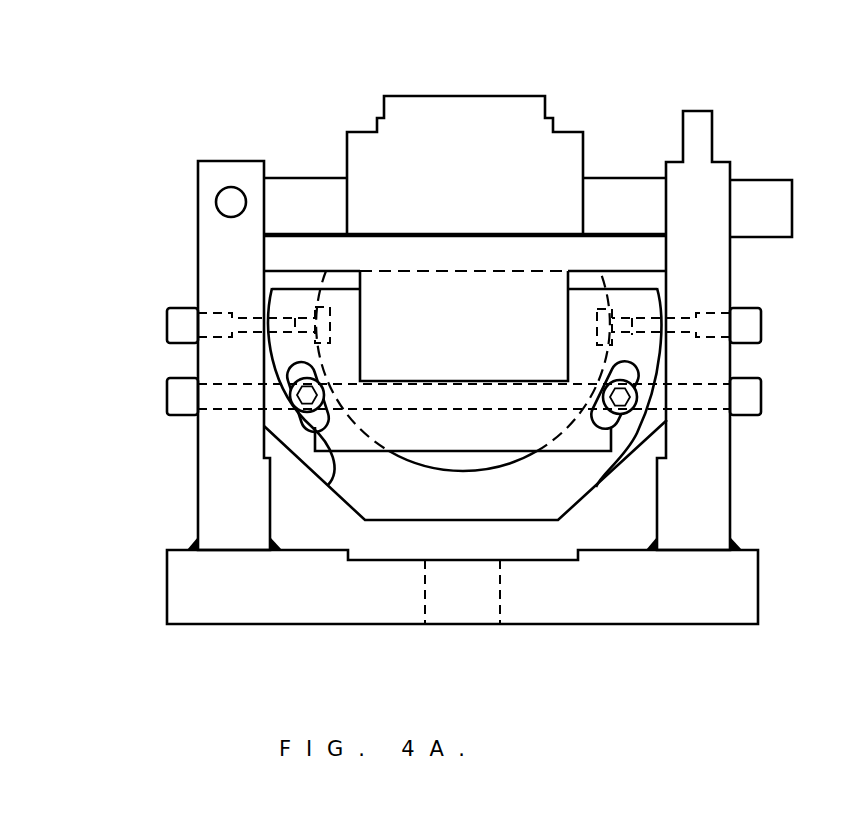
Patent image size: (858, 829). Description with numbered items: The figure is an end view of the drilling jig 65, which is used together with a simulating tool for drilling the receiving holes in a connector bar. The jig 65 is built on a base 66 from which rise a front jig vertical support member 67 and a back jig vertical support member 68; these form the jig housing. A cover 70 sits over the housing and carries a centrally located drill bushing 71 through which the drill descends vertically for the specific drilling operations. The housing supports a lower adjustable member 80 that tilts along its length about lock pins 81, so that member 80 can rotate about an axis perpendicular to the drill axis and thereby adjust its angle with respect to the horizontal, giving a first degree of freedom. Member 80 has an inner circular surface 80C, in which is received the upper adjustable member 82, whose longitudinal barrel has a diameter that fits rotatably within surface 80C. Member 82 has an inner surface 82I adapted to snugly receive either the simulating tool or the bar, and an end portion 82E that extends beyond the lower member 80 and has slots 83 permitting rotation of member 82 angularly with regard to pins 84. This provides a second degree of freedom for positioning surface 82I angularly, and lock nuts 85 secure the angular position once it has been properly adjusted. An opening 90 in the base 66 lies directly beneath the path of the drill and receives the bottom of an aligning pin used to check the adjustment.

The drilling jig 65 is at (82, 561).
The base 66 is at (228, 603).
The front jig vertical support member 67 is at (717, 503).
The back jig vertical support member 68 is at (215, 470).
The cover 70 is at (777, 190).
The drill bushing 71 is at (567, 142).
The lower adjustable member 80 is at (363, 494).
The inner circular surface 80C is at (444, 470).
The lock pins 81 is at (172, 307).
The upper adjustable member 82 is at (403, 394).
The end portion 82E is at (298, 296).
The inner surface 82I is at (477, 380).
The slots 83 is at (327, 485).
The pins 84 is at (318, 378).
The lock nuts 85 is at (170, 380).
The opening 90 is at (467, 604).